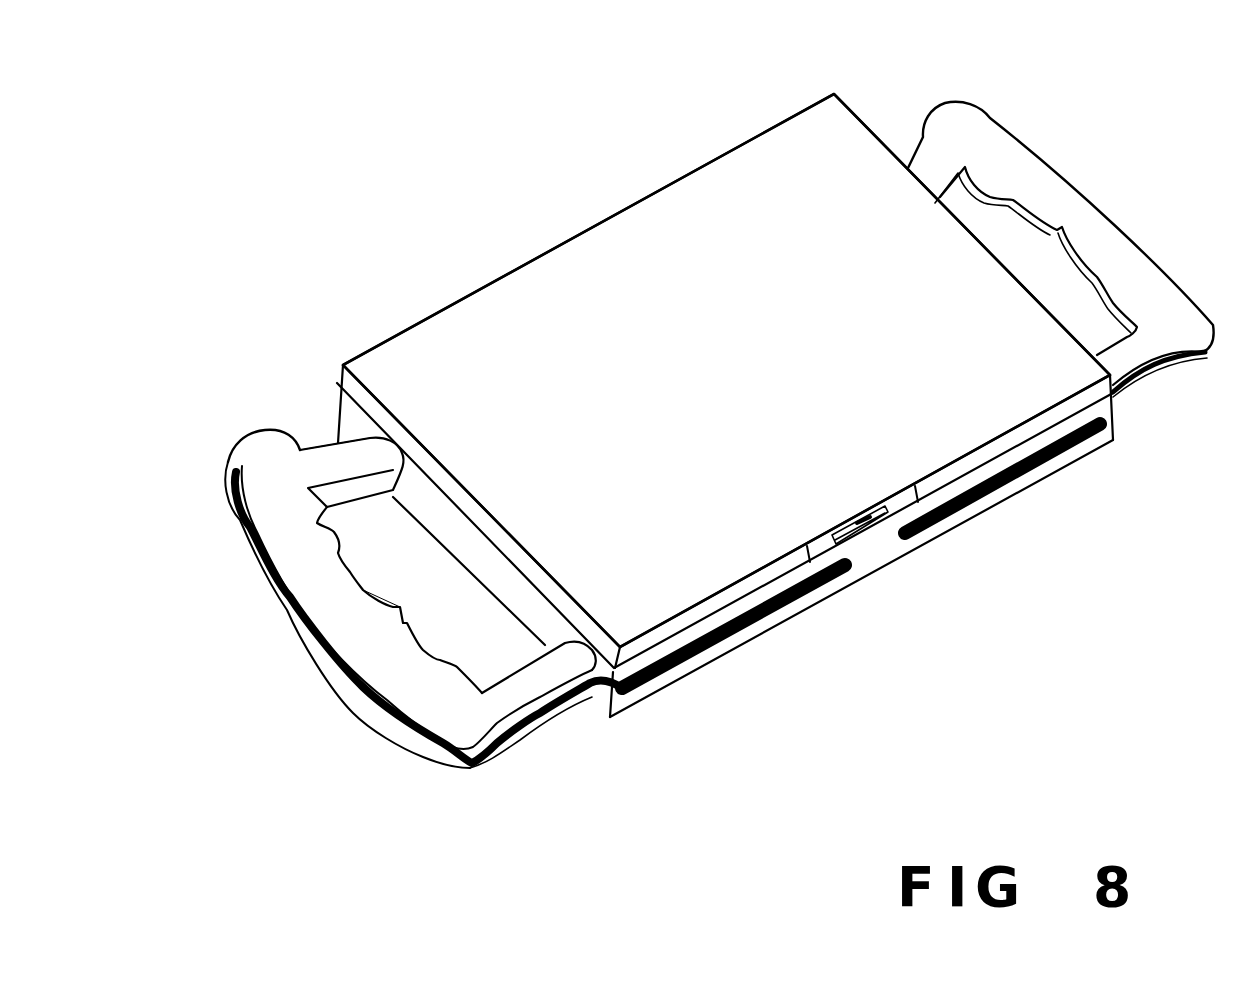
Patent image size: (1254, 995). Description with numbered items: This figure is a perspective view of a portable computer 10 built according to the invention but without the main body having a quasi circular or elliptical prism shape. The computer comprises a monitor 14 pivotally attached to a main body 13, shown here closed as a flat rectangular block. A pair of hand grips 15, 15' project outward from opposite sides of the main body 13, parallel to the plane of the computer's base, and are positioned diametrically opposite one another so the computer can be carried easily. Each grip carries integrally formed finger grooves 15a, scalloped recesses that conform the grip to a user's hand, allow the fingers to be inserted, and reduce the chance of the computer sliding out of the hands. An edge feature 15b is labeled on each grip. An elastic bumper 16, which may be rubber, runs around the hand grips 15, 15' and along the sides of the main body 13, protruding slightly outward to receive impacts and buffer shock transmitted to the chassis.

The portable computer 10 is at (458, 200).
The main body 13 is at (880, 558).
The monitor 14 is at (743, 173).
The hand grip 15 is at (406, 559).
The hand grip 15' is at (1061, 249).
The finger grooves 15a is at (400, 607).
The grip edge 15b is at (367, 533).
The elastic bumper 16 is at (452, 767).